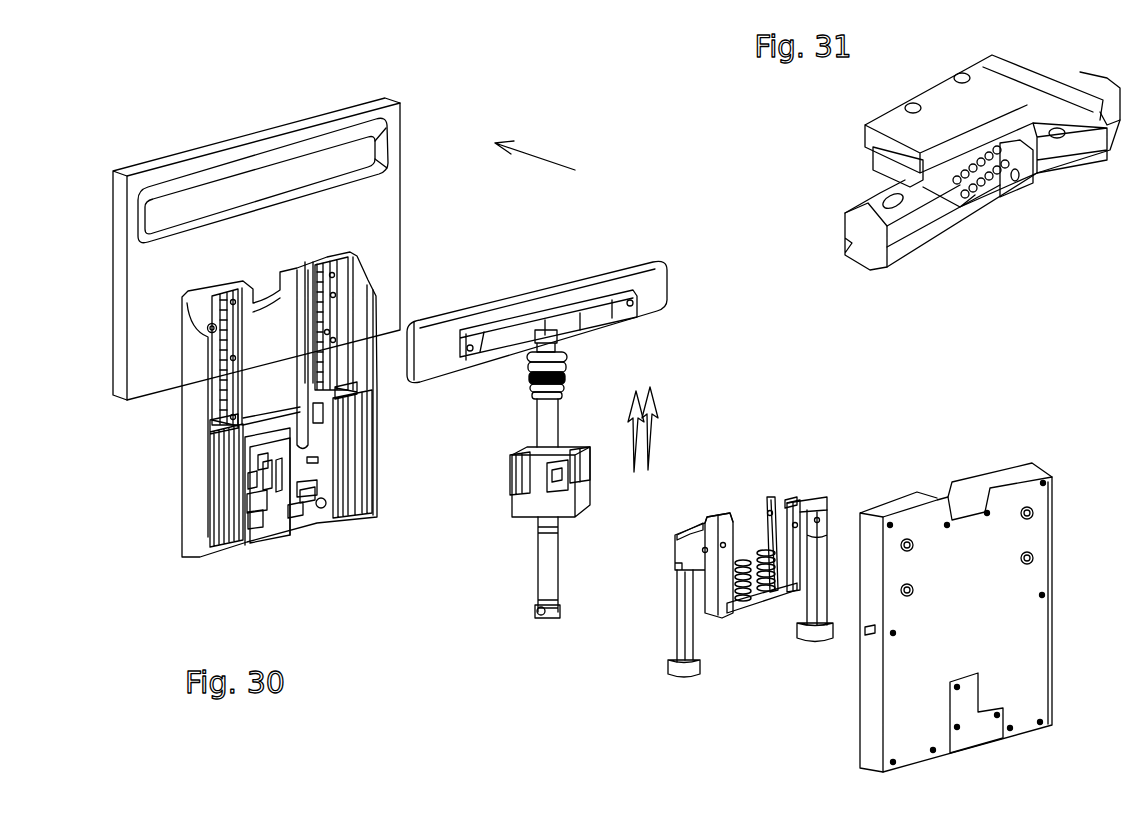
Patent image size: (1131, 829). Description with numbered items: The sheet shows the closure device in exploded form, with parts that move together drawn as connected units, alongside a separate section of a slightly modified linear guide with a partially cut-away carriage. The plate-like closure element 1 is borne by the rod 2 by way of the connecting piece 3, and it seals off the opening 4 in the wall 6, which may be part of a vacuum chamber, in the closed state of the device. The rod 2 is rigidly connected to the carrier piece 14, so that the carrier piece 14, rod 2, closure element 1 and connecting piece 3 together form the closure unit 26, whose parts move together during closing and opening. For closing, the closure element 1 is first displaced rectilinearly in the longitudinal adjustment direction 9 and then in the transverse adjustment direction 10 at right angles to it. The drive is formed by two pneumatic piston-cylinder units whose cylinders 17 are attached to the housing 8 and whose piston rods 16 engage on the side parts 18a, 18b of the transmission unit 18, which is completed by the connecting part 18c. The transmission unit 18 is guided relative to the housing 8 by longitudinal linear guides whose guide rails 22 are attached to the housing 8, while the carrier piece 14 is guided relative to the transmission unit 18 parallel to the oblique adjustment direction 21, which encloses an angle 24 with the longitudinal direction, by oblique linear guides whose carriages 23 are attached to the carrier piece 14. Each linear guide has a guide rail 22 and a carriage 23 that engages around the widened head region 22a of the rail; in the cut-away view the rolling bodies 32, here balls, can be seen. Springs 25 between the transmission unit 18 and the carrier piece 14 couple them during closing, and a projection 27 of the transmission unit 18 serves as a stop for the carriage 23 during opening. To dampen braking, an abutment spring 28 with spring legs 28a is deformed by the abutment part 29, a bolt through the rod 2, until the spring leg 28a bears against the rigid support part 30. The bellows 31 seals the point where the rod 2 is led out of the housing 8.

In FIG. 30, the closure element 1 is at (650, 285).
In FIG. 30, the rod 2 is at (547, 418).
In FIG. 30, the connecting piece 3 is at (597, 318).
In FIG. 30, the opening 4 is at (353, 152).
In FIG. 30, the wall 6 is at (385, 222).
In FIG. 30, the housing 8 is at (190, 450).
In FIG. 30, the longitudinal adjustment direction 9 is at (637, 425).
In FIG. 30, the transverse adjustment direction 10 is at (533, 153).
In FIG. 30, the carrier piece 14 is at (573, 503).
In FIG. 30, the piston rod 16 is at (683, 640).
In FIG. 30, the cylinder 17 is at (227, 537).
In FIG. 30, the transmission unit 18 is at (768, 580).
In FIG. 30, the side part 18a is at (715, 558).
In FIG. 30, the side part 18b is at (832, 532).
In FIG. 30, the connecting part 18c is at (762, 607).
In FIG. 30, the oblique adjustment direction 21 is at (650, 423).
In FIG. 30, the guide rail 22 is at (327, 308).
In FIG. 31, the guide rail 22 is at (923, 227).
In FIG. 31, the widened head region 22a is at (847, 213).
In FIG. 30, the carriage 23 is at (513, 475).
In FIG. 31, the carriage 23 is at (1042, 148).
In FIG. 30, the angle 24 is at (643, 443).
In FIG. 30, the spring 25 is at (803, 567).
In FIG. 30, the closure unit 26 is at (534, 538).
In FIG. 30, the projection 27 is at (740, 527).
In FIG. 30, the abutment spring 28 is at (273, 520).
In FIG. 30, the spring leg 28a is at (258, 484).
In FIG. 30, the abutment part 29 is at (536, 619).
In FIG. 30, the support part 30 is at (255, 470).
In FIG. 30, the bellows 31 is at (565, 363).
In FIG. 31, the rolling bodies 32 is at (993, 153).